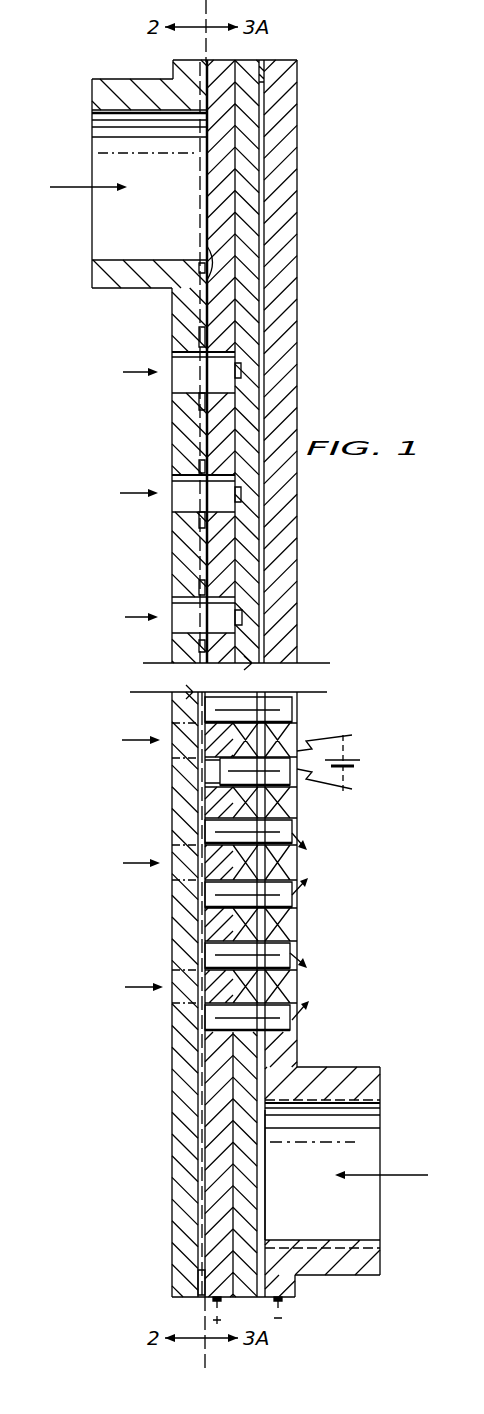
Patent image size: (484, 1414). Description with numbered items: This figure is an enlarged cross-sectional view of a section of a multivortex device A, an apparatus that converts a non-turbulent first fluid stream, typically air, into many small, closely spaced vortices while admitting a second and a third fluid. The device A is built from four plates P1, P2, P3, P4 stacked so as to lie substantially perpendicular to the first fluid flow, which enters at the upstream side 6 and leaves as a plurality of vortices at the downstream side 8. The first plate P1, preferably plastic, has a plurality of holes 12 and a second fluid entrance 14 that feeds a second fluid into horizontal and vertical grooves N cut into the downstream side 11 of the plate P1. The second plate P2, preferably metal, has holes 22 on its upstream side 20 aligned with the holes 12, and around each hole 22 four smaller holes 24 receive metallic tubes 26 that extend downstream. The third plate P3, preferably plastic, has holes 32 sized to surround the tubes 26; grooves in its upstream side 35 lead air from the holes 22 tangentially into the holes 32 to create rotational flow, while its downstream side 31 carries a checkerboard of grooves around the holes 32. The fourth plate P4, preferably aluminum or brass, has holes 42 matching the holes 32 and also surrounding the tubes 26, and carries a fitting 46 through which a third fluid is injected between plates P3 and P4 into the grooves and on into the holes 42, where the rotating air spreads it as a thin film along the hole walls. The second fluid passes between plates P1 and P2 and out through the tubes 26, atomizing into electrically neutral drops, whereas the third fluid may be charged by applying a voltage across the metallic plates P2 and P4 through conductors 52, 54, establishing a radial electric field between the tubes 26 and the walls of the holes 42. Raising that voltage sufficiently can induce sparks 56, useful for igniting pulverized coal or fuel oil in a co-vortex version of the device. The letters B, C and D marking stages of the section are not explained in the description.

The multivortex device A is at (90, 88).
The second fluid entrance 14 is at (123, 160).
The downstream side 11 is at (207, 246).
The downstream side 8 is at (297, 155).
The first plate P1 is at (178, 320).
The second plate P2 is at (220, 308).
The third plate P3 is at (238, 548).
The fourth plate P4 is at (283, 563).
The upstream side 6 is at (153, 342).
The holes 12 is at (187, 383).
The holes 22 is at (205, 448).
The second stage B is at (212, 494).
The smaller holes 24 is at (198, 733).
The upstream side 20 is at (198, 793).
The metallic tubes 26 is at (225, 832).
The spacer section C is at (245, 858).
The outlet flow D is at (300, 880).
The holes 32 is at (280, 920).
The holes 42 is at (283, 930).
The vertical grooves N is at (200, 1045).
The sparks 56 is at (350, 757).
The fitting 46 is at (380, 1083).
The downstream side 31 is at (265, 1183).
The upstream side 35 is at (233, 1212).
The conductor 52 is at (215, 1305).
The conductor 54 is at (283, 1305).